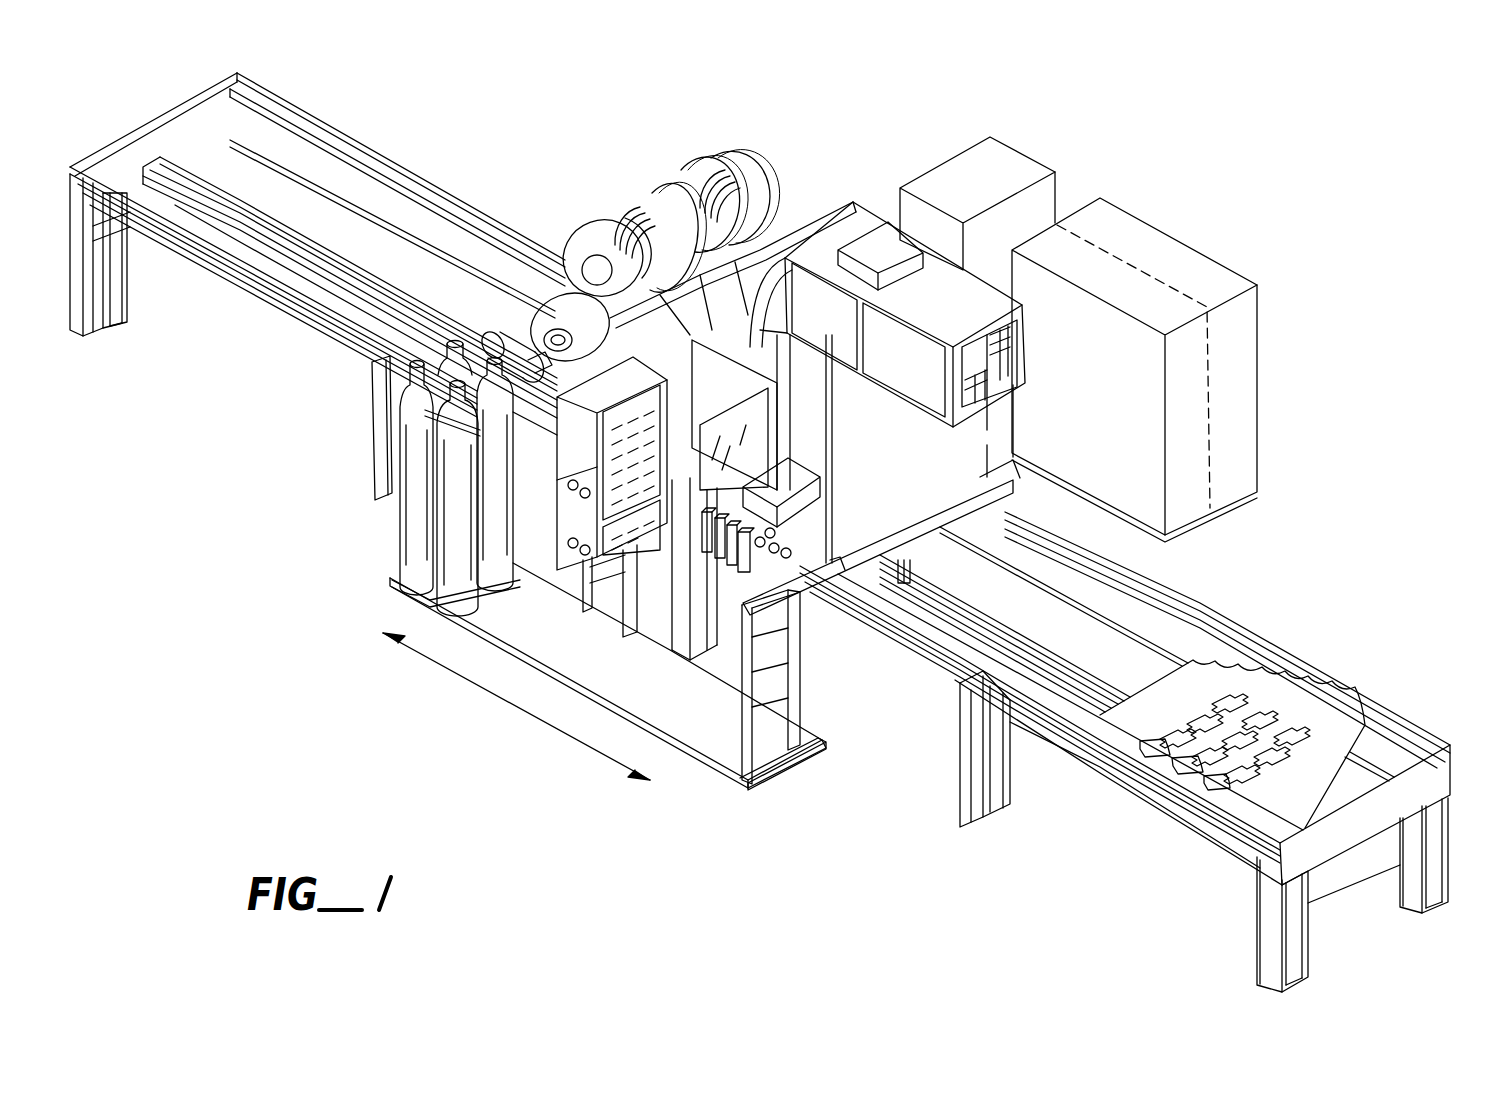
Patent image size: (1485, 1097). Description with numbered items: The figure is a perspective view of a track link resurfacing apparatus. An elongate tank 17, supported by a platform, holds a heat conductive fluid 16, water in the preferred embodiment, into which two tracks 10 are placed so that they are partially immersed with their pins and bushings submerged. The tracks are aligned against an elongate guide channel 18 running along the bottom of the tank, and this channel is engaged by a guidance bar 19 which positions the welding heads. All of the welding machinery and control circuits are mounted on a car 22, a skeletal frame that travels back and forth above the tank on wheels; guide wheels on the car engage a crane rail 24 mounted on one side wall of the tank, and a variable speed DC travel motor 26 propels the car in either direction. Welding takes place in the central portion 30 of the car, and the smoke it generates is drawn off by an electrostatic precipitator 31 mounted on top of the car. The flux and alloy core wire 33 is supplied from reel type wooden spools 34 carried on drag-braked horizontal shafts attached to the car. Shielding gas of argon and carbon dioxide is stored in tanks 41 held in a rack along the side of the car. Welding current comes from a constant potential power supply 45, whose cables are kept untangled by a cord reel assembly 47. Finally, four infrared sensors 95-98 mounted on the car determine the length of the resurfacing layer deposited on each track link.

The tracks 10 is at (1270, 700).
The fluid 16 is at (1360, 760).
The tank 17 is at (1170, 800).
The guide channel 18 is at (1050, 655).
The guidance bar 19 is at (912, 565).
The car 22 is at (818, 190).
The crane rail 24 is at (1215, 612).
The travel motor 26 is at (503, 335).
The central portion 30 is at (901, 472).
The electrostatic precipitator 31 is at (914, 369).
The flux and alloy core wire 33 is at (678, 172).
The reel type wooden spools 34 is at (570, 241).
The tanks 41 is at (407, 518).
The power supply 45 is at (1227, 262).
The cord reel assembly 47 is at (1053, 181).
The infrared sensors 95-98 is at (730, 598).